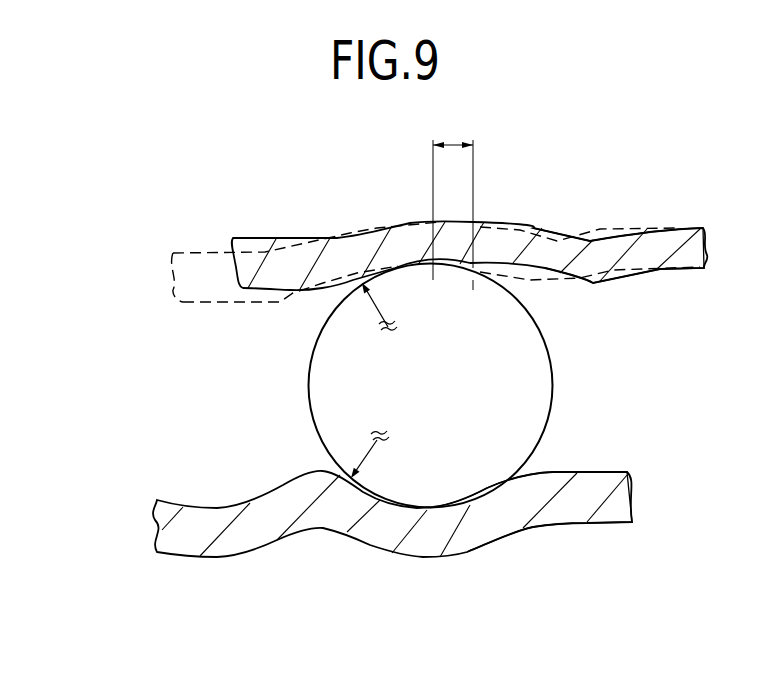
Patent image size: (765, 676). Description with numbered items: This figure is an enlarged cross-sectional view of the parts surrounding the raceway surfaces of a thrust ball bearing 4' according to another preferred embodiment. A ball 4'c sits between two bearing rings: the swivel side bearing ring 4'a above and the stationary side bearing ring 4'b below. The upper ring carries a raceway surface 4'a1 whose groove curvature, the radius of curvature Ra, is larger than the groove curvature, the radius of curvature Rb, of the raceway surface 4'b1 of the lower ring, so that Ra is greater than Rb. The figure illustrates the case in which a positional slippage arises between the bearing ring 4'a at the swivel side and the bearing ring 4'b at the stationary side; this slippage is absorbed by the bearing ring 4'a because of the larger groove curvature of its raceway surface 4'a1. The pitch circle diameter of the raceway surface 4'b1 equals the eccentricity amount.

The thrust ball bearing 4' is at (409, 380).
The swivel side bearing ring 4'a is at (470, 220).
The raceway surface of the swivel side bearing ring 4'a1 is at (618, 283).
The stationary side bearing ring 4'b is at (392, 558).
The raceway surface of the stationary side bearing ring 4'b1 is at (536, 487).
The ball 4'c is at (384, 386).
The groove curvature of the swivel side raceway surface Ra is at (386, 306).
The groove curvature of the stationary side raceway surface Rb is at (378, 456).